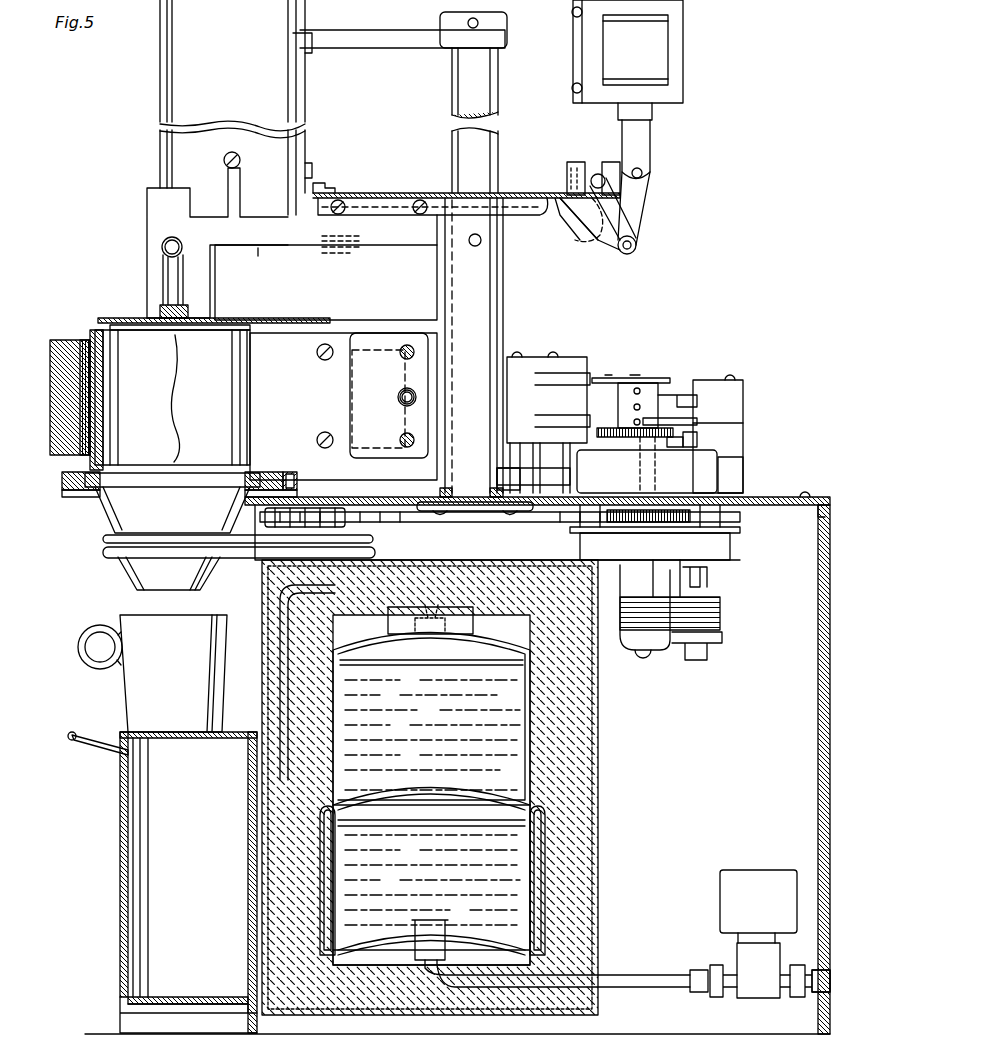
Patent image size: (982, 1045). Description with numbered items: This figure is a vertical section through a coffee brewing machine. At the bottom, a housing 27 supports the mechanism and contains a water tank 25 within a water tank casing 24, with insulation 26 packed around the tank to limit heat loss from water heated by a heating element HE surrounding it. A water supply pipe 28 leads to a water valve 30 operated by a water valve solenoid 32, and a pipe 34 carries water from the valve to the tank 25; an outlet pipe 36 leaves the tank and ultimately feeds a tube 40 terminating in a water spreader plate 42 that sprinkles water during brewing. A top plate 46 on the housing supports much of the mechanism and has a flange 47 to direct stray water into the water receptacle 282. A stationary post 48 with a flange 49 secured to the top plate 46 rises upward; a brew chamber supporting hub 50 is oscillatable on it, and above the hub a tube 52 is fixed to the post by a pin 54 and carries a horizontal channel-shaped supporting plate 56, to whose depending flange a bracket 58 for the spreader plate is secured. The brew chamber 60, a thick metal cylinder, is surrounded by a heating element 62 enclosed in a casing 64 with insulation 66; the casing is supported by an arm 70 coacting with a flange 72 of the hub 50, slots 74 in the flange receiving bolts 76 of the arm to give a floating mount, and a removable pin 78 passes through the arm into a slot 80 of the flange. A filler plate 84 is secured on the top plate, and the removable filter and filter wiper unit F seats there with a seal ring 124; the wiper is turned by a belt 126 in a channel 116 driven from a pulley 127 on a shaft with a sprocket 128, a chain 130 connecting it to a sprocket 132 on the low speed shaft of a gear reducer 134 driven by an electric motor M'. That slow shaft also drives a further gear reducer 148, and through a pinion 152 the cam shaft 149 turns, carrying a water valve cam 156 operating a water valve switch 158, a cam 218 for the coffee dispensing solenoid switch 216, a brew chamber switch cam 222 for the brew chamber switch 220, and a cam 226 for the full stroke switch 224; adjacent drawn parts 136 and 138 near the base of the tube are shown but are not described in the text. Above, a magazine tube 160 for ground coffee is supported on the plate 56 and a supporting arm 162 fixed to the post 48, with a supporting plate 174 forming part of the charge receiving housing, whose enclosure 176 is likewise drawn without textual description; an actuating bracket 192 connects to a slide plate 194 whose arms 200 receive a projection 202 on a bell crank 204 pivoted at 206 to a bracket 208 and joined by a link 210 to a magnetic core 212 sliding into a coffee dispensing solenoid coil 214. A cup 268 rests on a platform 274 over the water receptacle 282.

The water tank casing 24 is at (598, 765).
The water tank 25 is at (528, 730).
The insulation 26 is at (575, 930).
The housing 27 is at (818, 742).
The water supply pipe 28 is at (818, 985).
The water valve 30 is at (737, 950).
The water valve solenoid 32 is at (720, 870).
The pipe 34 is at (627, 975).
The outlet pipe 36 is at (370, 732).
The tube 40 is at (160, 242).
The water spreader plate 42 is at (195, 340).
The top plate 46 is at (790, 497).
The flange 47 is at (300, 482).
The stationary post 48 is at (450, 108).
The flange 49 is at (538, 520).
The brew chamber supporting hub 50 is at (500, 338).
The tube 52 is at (497, 292).
The pin 54 is at (480, 245).
The horizontal channel-shaped supporting plate 56 is at (515, 203).
The bracket 58 is at (322, 290).
The brew chamber 60 is at (110, 325).
The heating element 62 is at (75, 462).
The casing 64 is at (75, 330).
The insulation 66 is at (50, 335).
The arm 70 is at (318, 333).
The flange 72 is at (392, 333).
The slots 74 is at (352, 360).
The bolts 76 is at (402, 438).
The removable pin 78 is at (402, 392).
The slot 80 is at (398, 400).
The filler plate 84 is at (65, 494).
The channel 116 is at (118, 550).
The seal ring 124 is at (95, 490).
The belt 126 is at (373, 539).
The pulley 127 is at (375, 553).
The sprocket 128 is at (312, 505).
The chain 130 is at (480, 522).
The sprocket 132 is at (690, 515).
The gear reducer 134 is at (730, 556).
The block 136 is at (475, 483).
The bar 138 is at (565, 480).
The further gear reducer 148 is at (715, 482).
The cam shaft 149 is at (640, 378).
The pinion 152 is at (643, 440).
The water valve cam 156 is at (618, 378).
The water valve switch 158 is at (580, 357).
The magazine tube 160 is at (305, 108).
The supporting arm 162 is at (395, 40).
The supporting plate 174 is at (235, 258).
The housing 176 is at (147, 258).
The actuating bracket 192 is at (333, 182).
The slide plate 194 is at (388, 198).
The arms 200 is at (605, 165).
The projection 202 is at (600, 180).
The bell crank 204 is at (598, 250).
The pivot 206 is at (575, 248).
The bracket 208 is at (560, 222).
The link 210 is at (640, 232).
The magnetic core 212 is at (650, 128).
The coffee dispensing solenoid coil 214 is at (668, 60).
The coffee dispensing solenoid switch 216 is at (743, 385).
The cam 218 is at (683, 383).
The brew chamber switch 220 is at (580, 445).
The brew chamber switch cam 222 is at (690, 420).
The full stroke switch 224 is at (743, 432).
The cam 226 is at (675, 447).
The cup 268 is at (126, 690).
The platform 274 is at (95, 730).
The water receptacle 282 is at (122, 771).
The filter and filter wiper unit F is at (118, 570).
The heating element HE is at (540, 870).
The electric motor M' is at (688, 610).